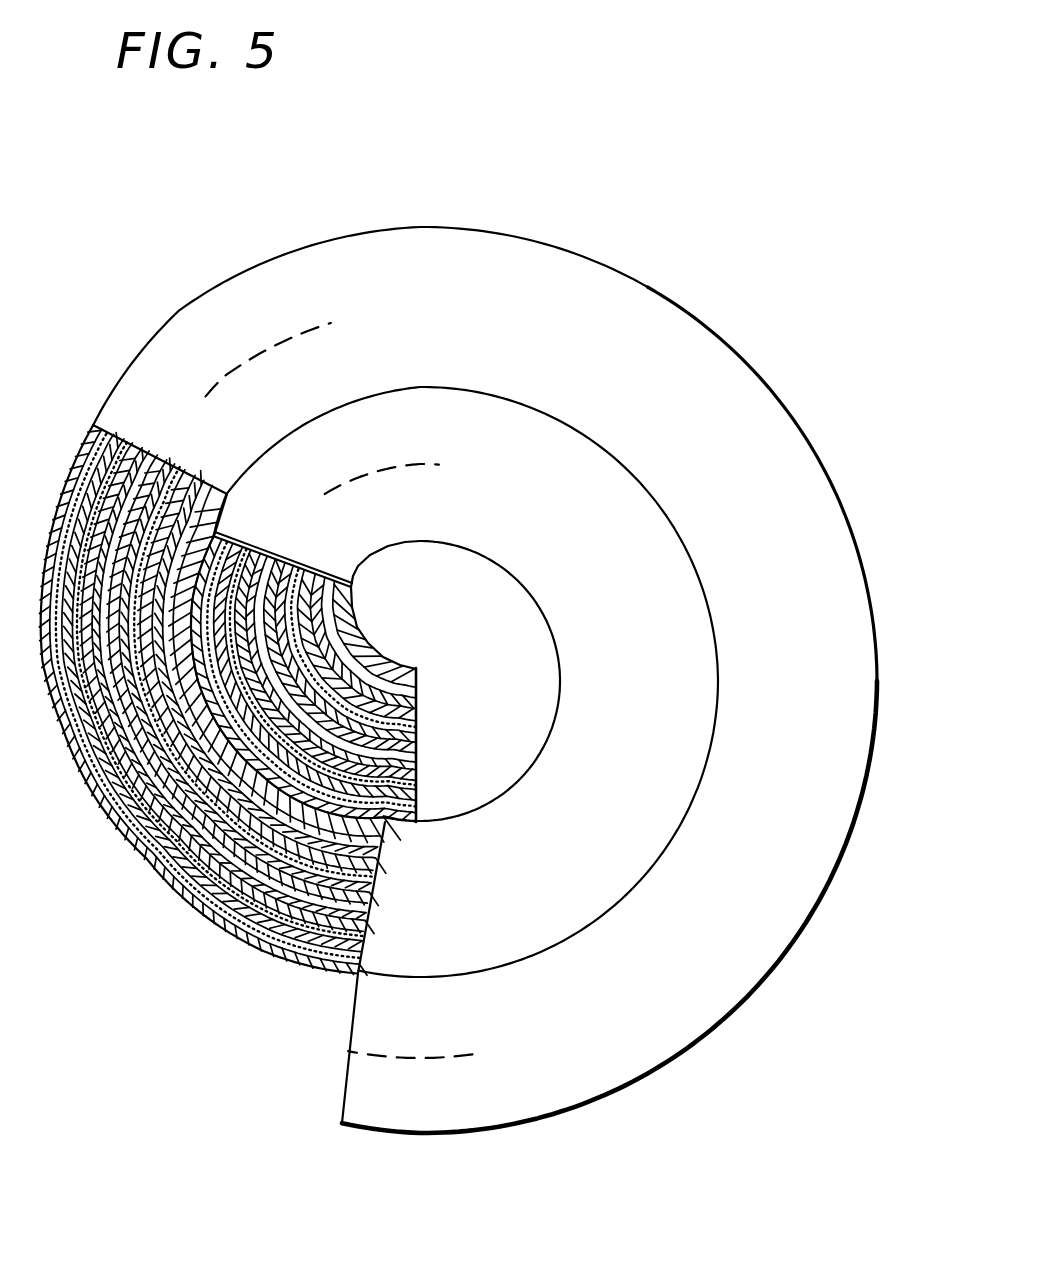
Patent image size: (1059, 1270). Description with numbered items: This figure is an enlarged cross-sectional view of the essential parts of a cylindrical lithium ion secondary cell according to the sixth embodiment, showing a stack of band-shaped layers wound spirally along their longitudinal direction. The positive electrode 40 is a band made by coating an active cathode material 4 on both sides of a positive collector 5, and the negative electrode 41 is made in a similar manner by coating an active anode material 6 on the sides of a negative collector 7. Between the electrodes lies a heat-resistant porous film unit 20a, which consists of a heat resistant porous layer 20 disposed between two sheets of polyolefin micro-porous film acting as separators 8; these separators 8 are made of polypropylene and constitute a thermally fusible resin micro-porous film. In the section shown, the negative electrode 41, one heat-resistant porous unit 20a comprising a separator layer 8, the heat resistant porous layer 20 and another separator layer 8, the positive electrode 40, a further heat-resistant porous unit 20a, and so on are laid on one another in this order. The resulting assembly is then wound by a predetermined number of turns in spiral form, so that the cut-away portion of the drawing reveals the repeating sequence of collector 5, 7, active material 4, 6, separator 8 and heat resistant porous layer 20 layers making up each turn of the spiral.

The active cathode material 4 is at (416, 747).
The positive collector 5 is at (416, 753).
The active anode material 6 is at (416, 672).
The negative collector 7 is at (416, 706).
The separator 8 is at (416, 713).
The heat resistant porous layer 20 is at (416, 723).
The heat-resistant porous film unit 20a is at (232, 548).
The positive electrode 40 is at (263, 552).
The negative electrode 41 is at (345, 586).